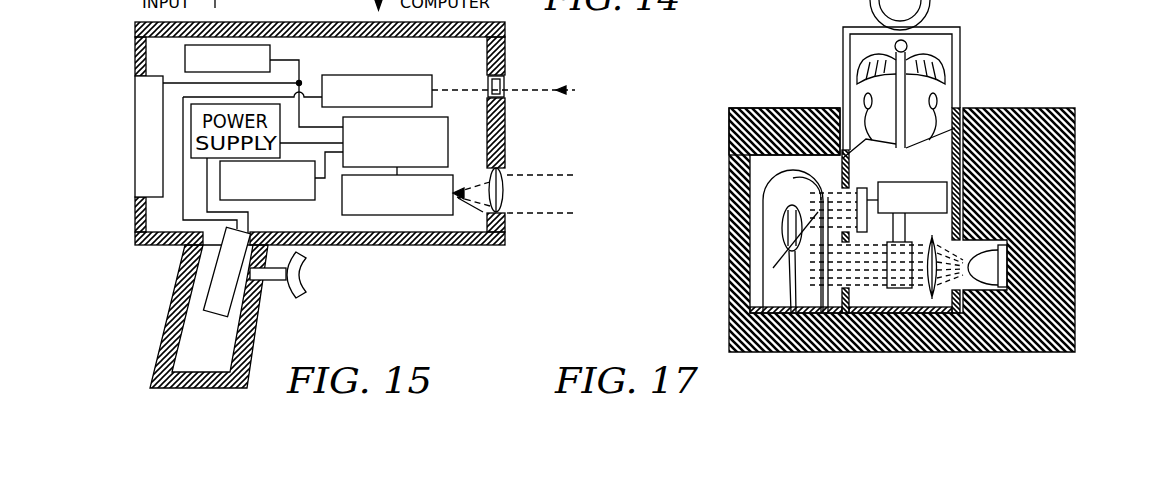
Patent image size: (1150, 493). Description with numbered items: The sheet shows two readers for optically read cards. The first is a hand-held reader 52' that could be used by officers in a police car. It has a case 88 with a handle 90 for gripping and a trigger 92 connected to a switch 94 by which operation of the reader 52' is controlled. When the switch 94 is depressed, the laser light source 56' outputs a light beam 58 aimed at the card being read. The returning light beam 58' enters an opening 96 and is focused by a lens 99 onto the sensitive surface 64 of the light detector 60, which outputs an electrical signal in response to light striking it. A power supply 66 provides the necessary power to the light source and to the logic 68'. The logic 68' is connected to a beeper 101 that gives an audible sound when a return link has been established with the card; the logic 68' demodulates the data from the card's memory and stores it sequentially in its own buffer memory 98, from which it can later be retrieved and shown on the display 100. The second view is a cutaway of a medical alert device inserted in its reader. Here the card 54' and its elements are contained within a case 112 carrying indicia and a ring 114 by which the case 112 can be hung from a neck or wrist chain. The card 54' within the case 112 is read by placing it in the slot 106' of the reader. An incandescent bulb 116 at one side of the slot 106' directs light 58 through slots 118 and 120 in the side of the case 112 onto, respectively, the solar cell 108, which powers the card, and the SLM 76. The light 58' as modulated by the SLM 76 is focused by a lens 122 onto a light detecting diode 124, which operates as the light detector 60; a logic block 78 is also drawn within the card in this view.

In FIG. 15, the hand-held reader 52' is at (347, 133).
In FIG. 17, the card 54' is at (902, 211).
In FIG. 15, the laser light source 56' is at (387, 75).
In FIG. 15, the light beam 58 is at (534, 99).
In FIG. 17, the light beam 58 is at (881, 318).
In FIG. 15, the returning light beam 58' is at (537, 200).
In FIG. 17, the returning light beam 58' is at (896, 289).
In FIG. 15, the light detector 60 is at (395, 215).
In FIG. 17, the light detector 60 is at (1050, 250).
In FIG. 15, the sensitive surface 64 is at (483, 213).
In FIG. 15, the power supply 66 is at (192, 104).
In FIG. 15, the logic 68' is at (450, 135).
In FIG. 17, the SLM 76 is at (898, 316).
In FIG. 17, the logic circuit 78 is at (922, 182).
In FIG. 15, the case 88 is at (135, 225).
In FIG. 15, the handle 90 is at (167, 322).
In FIG. 15, the trigger 92 is at (298, 275).
In FIG. 15, the switch 94 is at (222, 313).
In FIG. 15, the opening 96 is at (503, 172).
In FIG. 15, the buffer memory 98 is at (305, 200).
In FIG. 15, the lens 99 is at (505, 193).
In FIG. 15, the display 100 is at (135, 118).
In FIG. 15, the beeper 101 is at (270, 49).
In FIG. 17, the slot 106' is at (924, 173).
In FIG. 17, the solar cell 108 is at (863, 187).
In FIG. 17, the case 112 is at (960, 50).
In FIG. 17, the ring 114 is at (928, 5).
In FIG. 17, the incandescent bulb 116 is at (730, 200).
In FIG. 17, the slot 118 is at (762, 107).
In FIG. 17, the slot 120 is at (843, 262).
In FIG. 17, the lens 122 is at (933, 241).
In FIG. 17, the light detecting diode 124 is at (987, 262).